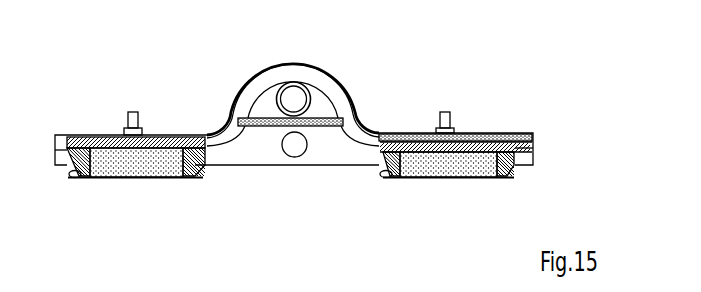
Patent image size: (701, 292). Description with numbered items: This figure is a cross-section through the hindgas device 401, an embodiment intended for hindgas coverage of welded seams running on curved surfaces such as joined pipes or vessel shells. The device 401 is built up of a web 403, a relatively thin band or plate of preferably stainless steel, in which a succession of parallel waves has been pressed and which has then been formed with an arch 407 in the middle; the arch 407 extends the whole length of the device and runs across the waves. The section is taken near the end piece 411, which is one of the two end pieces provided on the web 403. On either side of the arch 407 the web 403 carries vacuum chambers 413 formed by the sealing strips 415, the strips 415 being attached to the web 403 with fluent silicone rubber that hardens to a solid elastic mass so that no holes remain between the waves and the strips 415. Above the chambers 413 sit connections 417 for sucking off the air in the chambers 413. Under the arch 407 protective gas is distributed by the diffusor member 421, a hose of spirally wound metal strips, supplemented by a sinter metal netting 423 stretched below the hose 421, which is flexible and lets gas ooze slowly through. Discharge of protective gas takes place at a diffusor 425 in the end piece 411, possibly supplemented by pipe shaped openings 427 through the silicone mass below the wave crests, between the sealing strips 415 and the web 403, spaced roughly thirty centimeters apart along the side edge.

The hindgas device 401 is at (364, 80).
The web 403 is at (245, 88).
The arch 407 is at (259, 152).
The end piece 411 is at (343, 153).
The vacuum chambers 413 is at (131, 172).
The sealing strips 415 is at (77, 179).
The connections 417 is at (142, 113).
The diffusor member 421 is at (296, 90).
The sinter metal netting 423 is at (268, 118).
The diffusor 425 is at (295, 147).
The pipe shaped openings 427 is at (520, 145).